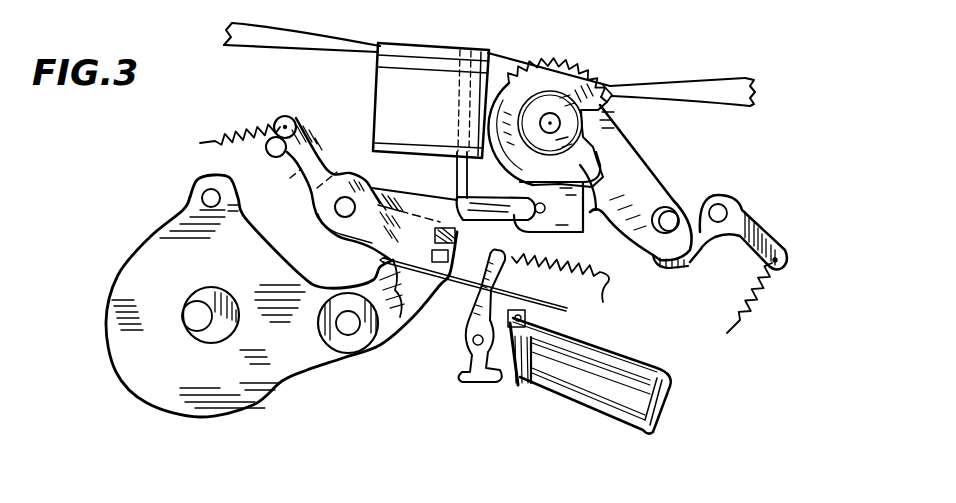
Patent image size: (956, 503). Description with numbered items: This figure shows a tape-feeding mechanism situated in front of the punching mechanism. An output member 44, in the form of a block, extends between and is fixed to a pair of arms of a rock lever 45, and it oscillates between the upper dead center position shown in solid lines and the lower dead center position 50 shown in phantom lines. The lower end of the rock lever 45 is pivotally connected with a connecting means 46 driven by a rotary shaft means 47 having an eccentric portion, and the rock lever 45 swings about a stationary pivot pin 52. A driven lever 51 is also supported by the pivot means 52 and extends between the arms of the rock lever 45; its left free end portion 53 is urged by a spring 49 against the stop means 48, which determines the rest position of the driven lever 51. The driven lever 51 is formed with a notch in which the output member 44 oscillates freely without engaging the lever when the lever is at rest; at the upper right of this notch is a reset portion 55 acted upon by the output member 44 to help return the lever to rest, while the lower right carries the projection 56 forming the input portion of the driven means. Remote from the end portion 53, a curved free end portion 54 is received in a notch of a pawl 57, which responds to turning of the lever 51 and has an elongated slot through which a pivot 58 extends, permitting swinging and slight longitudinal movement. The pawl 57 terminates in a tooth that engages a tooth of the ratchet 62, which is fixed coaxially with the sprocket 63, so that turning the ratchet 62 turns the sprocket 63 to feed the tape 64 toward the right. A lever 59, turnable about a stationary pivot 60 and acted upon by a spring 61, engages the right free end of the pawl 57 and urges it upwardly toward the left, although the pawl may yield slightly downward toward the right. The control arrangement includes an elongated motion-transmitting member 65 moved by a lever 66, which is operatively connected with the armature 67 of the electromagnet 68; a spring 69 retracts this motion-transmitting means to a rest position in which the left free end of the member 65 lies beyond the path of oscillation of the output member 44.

The output member 44 is at (445, 227).
The rock lever 45 is at (397, 343).
The connecting means 46 is at (283, 378).
The rotary shaft means 47 is at (215, 337).
The stop means 48 is at (267, 150).
The spring 49 is at (222, 128).
The lower dead center position 50 is at (383, 263).
The driven lever 51 is at (373, 203).
The stationary pivot pin 52 is at (344, 197).
The left free end portion 53 is at (302, 125).
The curved free end portion 54 is at (520, 217).
The reset portion 55 is at (463, 203).
The projection 56 is at (420, 320).
The pawl 57 is at (642, 186).
The pivot 58 is at (670, 222).
The lever 59 is at (707, 240).
The stationary pivot 60 is at (727, 213).
The spring 61 is at (752, 305).
The ratchet 62 is at (600, 82).
The sprocket 63 is at (580, 100).
The tape 64 is at (740, 88).
The elongated motion-transmitting member 65 is at (546, 282).
The lever 66 is at (475, 310).
The armature 67 is at (532, 388).
The electromagnet 68 is at (613, 402).
The spring 69 is at (606, 295).